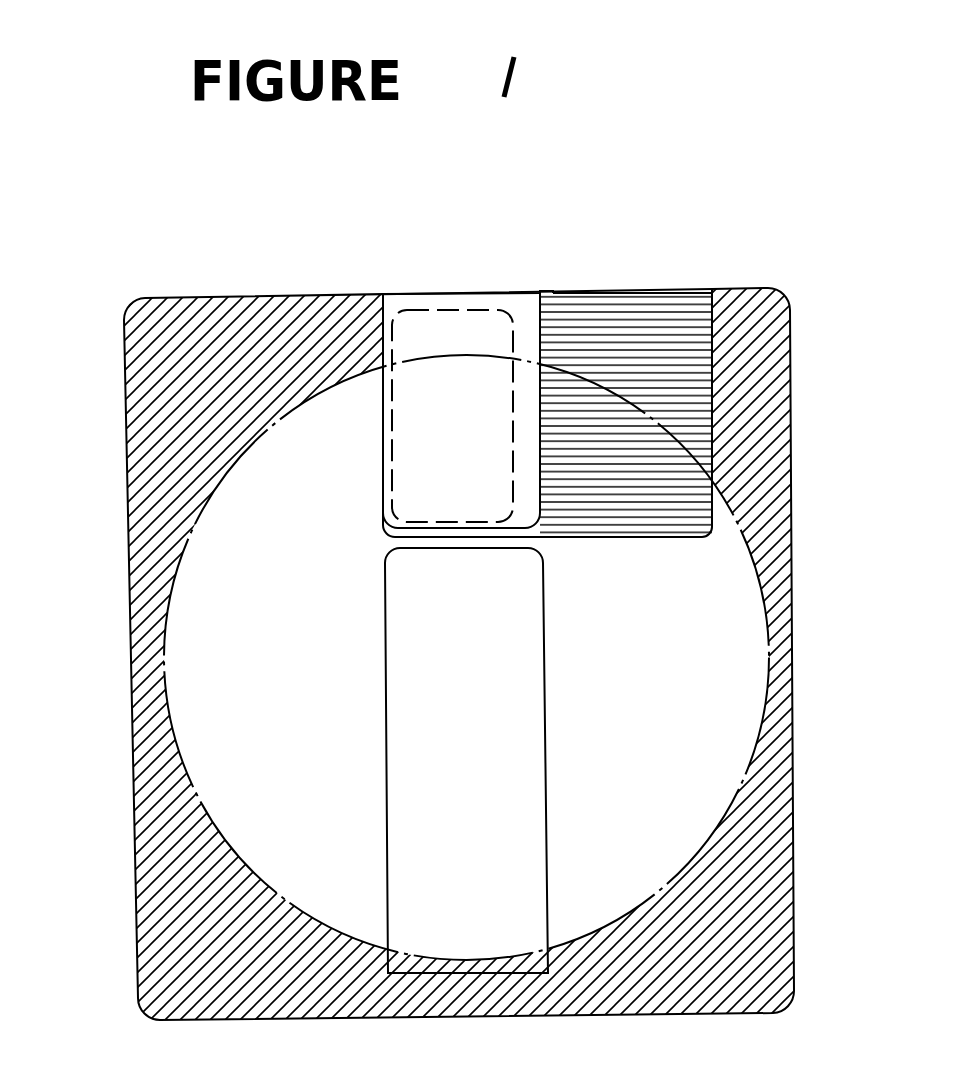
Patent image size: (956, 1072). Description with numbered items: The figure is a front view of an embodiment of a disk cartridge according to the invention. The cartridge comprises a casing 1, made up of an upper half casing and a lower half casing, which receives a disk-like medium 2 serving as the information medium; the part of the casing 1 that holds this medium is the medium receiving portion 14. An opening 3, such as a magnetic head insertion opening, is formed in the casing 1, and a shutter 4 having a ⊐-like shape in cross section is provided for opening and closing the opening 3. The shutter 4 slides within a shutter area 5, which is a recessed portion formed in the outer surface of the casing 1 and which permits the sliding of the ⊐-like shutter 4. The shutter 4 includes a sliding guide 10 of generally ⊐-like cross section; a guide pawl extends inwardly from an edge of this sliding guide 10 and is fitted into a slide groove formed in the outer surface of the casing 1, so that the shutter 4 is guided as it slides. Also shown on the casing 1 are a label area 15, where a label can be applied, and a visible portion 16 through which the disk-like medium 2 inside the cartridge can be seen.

The casing 1 is at (790, 376).
The disk-like medium 2 is at (752, 548).
The opening 3 is at (444, 290).
The shutter 4 is at (492, 298).
The shutter area 5 is at (712, 318).
The sliding guide 10 is at (548, 293).
The medium receiving portion 14 is at (672, 889).
The label area 15 is at (543, 657).
The visible portion 16 is at (212, 633).